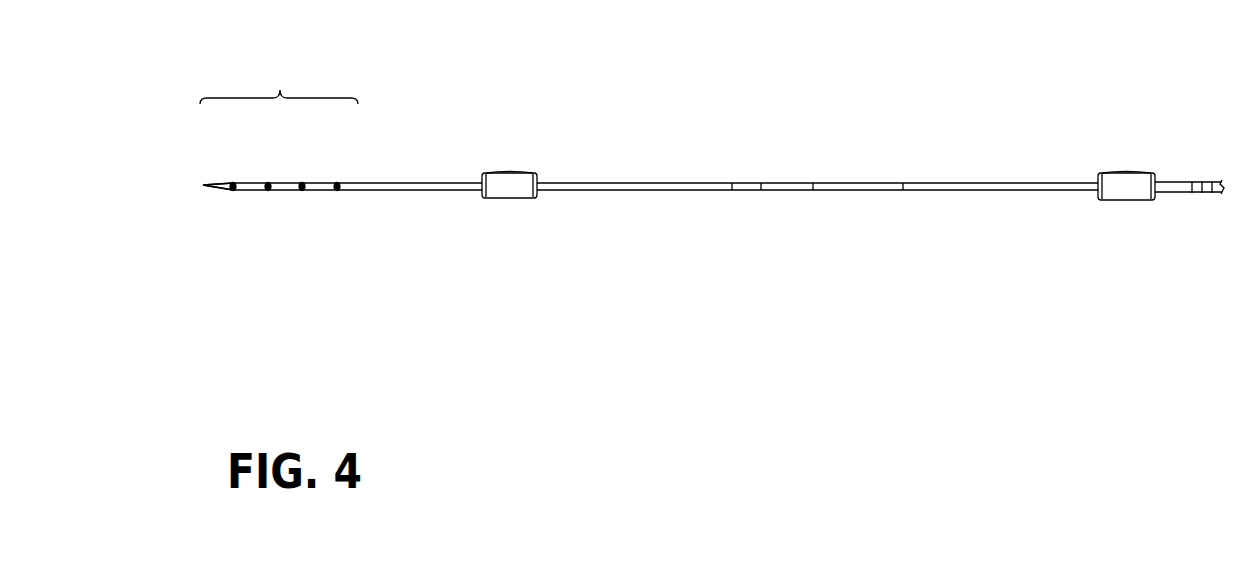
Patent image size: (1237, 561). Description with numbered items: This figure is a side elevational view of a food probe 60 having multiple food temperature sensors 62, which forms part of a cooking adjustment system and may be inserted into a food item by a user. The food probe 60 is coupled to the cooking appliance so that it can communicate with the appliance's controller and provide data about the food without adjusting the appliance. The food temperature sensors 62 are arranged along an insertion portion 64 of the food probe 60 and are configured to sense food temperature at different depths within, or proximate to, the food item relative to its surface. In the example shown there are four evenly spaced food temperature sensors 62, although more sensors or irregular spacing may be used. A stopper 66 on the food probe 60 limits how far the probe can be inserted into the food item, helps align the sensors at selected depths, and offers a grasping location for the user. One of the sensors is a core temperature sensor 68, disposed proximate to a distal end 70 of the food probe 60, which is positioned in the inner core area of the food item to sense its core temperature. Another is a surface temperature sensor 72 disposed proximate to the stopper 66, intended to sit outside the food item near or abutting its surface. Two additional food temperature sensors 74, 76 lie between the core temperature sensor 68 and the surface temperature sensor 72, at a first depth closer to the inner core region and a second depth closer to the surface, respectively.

The food probe 60 is at (713, 161).
The food temperature sensors 62 is at (279, 126).
The insertion portion 64 is at (378, 183).
The stopper 66 is at (503, 193).
The core temperature sensor 68 is at (233, 183).
The distal end 70 is at (207, 186).
The surface temperature sensor 72 is at (337, 183).
The additional food temperature sensor 74 is at (269, 183).
The additional food temperature sensor 76 is at (302, 183).